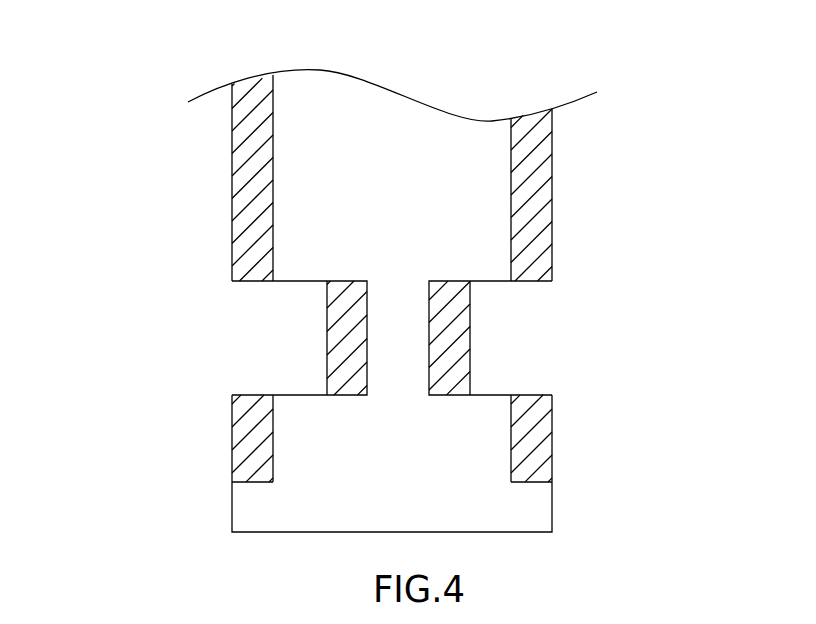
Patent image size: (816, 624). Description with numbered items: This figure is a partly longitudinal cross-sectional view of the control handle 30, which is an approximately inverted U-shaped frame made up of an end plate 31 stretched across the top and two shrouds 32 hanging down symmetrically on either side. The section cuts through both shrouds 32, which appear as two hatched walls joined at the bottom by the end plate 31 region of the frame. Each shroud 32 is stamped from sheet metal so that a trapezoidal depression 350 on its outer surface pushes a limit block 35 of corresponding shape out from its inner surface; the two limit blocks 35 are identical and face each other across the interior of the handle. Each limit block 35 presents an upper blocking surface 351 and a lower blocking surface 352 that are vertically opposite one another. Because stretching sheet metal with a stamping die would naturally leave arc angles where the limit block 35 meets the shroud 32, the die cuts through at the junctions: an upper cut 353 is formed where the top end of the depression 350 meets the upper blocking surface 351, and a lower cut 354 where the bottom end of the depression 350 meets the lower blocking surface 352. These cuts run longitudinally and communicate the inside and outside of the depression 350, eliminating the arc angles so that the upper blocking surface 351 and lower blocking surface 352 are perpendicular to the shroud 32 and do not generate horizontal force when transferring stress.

The control handle 30 is at (188, 121).
The end plate 31 is at (305, 98).
The shroud 32 is at (232, 207).
The limit block 35 is at (347, 358).
The depression 350 is at (522, 353).
The upper blocking surface 351 is at (447, 281).
The lower blocking surface 352 is at (438, 397).
The upper cut 353 is at (490, 281).
The lower cut 354 is at (489, 397).